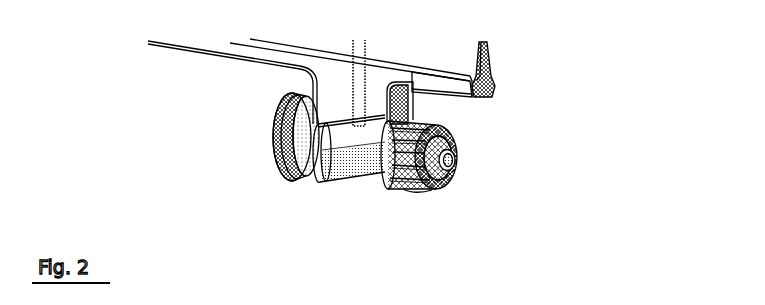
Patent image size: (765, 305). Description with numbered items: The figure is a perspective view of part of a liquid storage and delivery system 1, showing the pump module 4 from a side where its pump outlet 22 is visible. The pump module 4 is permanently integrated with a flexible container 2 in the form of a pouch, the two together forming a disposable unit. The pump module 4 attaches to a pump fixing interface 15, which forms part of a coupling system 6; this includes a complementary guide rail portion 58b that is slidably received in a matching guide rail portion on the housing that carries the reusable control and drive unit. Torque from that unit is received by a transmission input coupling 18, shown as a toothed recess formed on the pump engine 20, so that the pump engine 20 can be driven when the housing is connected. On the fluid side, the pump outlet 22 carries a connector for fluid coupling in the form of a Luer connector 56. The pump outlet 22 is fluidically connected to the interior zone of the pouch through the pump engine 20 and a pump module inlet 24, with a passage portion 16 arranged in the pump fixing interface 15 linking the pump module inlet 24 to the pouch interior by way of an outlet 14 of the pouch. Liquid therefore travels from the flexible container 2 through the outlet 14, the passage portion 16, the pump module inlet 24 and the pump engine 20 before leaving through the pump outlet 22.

The liquid storage and delivery system 1 is at (401, 143).
The flexible container 2 is at (510, 54).
The pump module 4 is at (386, 187).
The coupling system 6 is at (496, 98).
The outlet of the pouch 14 is at (372, 33).
The pump fixing interface 15 is at (328, 84).
The passage portion 16 is at (473, 173).
The transmission input coupling 18 is at (255, 165).
The pump engine 20 is at (281, 190).
The pump outlet 22 is at (453, 163).
The pump module inlet 24 is at (355, 125).
The Luer connector 56 is at (420, 193).
The complementary guide rail portion 58b is at (488, 85).